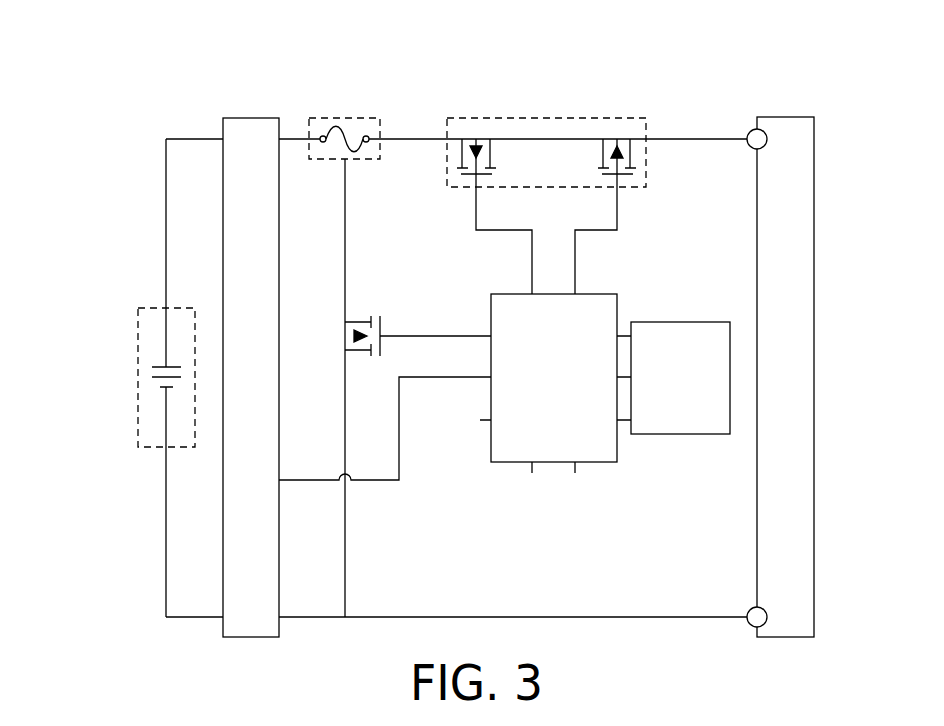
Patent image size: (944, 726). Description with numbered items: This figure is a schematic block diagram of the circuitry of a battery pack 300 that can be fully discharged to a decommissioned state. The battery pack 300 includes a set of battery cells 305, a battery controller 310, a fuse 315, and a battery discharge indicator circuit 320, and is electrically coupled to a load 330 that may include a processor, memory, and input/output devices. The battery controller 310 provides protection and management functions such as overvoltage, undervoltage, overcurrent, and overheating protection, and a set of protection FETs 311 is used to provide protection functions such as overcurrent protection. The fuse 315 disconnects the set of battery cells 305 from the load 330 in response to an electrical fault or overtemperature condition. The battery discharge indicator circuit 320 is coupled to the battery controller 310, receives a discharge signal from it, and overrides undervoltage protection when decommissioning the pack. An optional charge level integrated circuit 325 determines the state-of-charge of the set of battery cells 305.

The battery pack 300 is at (128, 620).
The set of battery cells 305 is at (139, 352).
The battery controller 310 is at (517, 462).
The protection FETs 311 is at (545, 118).
The fuse 315 is at (340, 118).
The battery discharge indicator circuit 320 is at (245, 118).
The charge level integrated circuit 325 is at (686, 434).
The load 330 is at (814, 362).